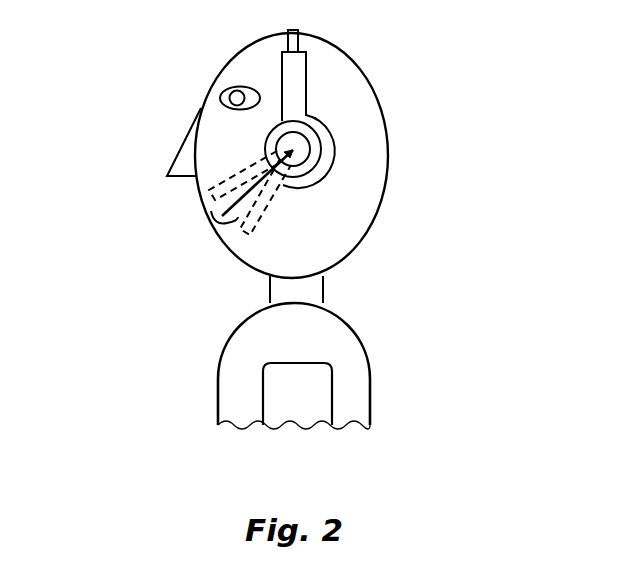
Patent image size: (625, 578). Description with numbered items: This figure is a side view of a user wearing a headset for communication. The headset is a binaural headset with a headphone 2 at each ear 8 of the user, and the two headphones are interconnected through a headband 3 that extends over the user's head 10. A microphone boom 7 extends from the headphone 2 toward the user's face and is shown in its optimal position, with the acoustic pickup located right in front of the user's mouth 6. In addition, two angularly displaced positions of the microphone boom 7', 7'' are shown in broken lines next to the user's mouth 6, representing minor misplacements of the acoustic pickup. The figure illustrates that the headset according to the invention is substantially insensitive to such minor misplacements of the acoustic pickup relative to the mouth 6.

The headphone 2 is at (327, 147).
The headband 3 is at (307, 68).
The mouth 6 is at (214, 218).
The microphone boom 7 is at (186, 245).
The angularly displaced microphone boom 7' is at (340, 245).
The angularly displaced microphone boom 7'' is at (171, 159).
The ear 8 is at (318, 186).
The head 10 is at (367, 122).